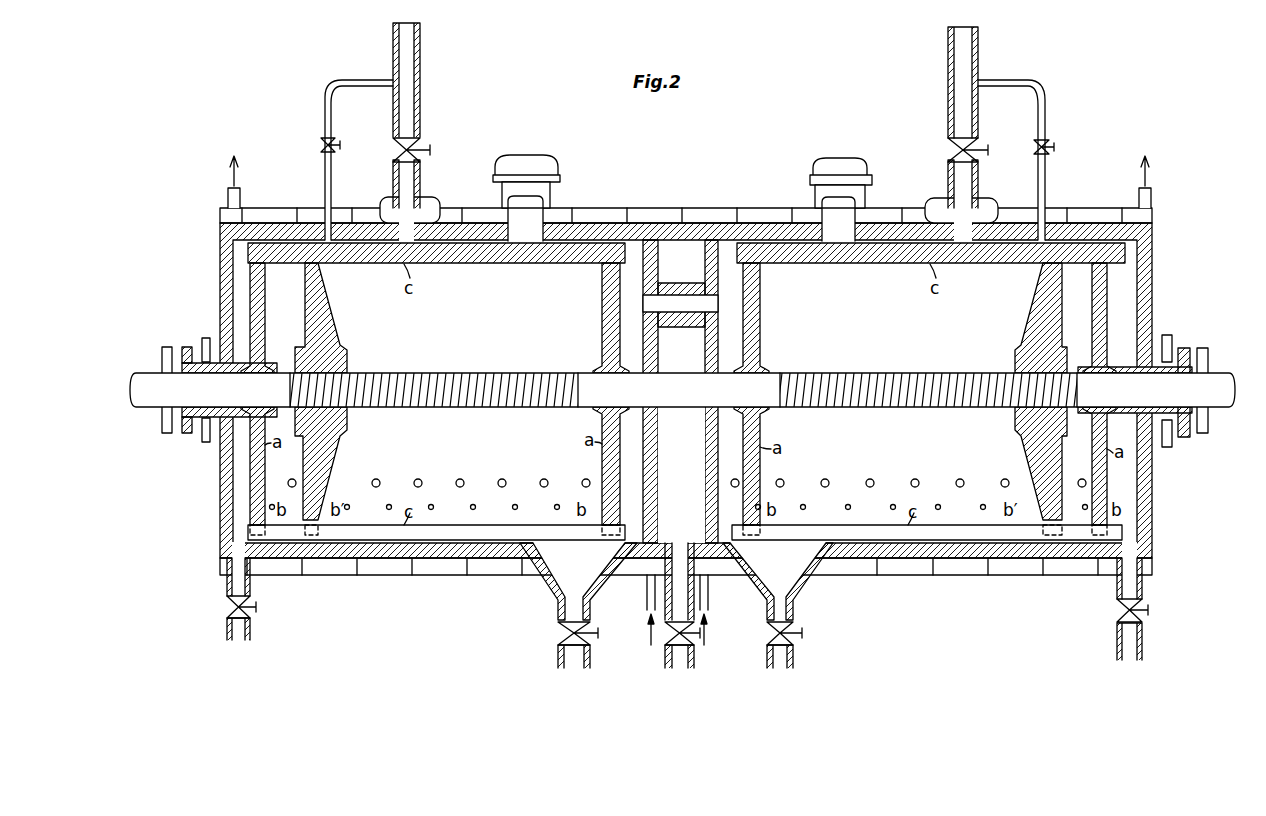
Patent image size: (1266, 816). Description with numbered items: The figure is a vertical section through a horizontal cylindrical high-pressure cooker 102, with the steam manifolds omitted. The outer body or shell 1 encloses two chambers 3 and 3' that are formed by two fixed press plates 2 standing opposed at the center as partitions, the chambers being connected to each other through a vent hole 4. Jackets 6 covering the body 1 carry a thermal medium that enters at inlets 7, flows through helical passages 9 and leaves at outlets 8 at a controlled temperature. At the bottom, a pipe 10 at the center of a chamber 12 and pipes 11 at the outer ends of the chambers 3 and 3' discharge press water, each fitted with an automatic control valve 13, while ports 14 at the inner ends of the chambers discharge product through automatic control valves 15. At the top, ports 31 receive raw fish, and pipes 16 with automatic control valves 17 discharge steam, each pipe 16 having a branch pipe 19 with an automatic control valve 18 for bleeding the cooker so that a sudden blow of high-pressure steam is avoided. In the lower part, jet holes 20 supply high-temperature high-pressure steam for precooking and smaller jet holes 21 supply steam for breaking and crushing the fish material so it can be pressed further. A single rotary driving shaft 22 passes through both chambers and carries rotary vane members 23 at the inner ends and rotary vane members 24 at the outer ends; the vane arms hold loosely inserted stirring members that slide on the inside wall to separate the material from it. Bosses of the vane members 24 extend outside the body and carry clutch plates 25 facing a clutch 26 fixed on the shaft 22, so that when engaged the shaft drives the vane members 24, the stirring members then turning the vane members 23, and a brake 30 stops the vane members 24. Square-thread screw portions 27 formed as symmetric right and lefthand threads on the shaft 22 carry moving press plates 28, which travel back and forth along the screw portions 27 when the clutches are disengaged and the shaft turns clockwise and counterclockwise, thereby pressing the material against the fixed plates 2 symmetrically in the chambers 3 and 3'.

The outer body or shell 1 is at (1153, 298).
The fixed press plate 2 is at (645, 325).
The chamber 3 is at (928, 391).
The chamber 3' is at (436, 391).
The vent hole 4 is at (718, 308).
The jacket 6 is at (437, 576).
The inlet 7 is at (645, 600).
The outlet 8 is at (228, 200).
The helical passage 9 is at (500, 576).
The press water discharge pipe 10 is at (694, 660).
The press water discharge pipe 11 is at (250, 634).
The chamber 12 is at (690, 480).
The automatic control valve 13 is at (226, 607).
The product discharge port 14 is at (544, 592).
The automatic control valve 15 is at (588, 645).
The steam discharge pipe 16 is at (420, 44).
The automatic control valve 17 is at (422, 148).
The automatic control valve 18 is at (324, 141).
The branch pipe 19 is at (325, 170).
The jet hole 20 is at (376, 479).
The smaller jet hole 21 is at (515, 503).
The rotary driving shaft 22 is at (770, 373).
The rotary vane member 23 is at (602, 325).
The rotary vane member 24 is at (265, 332).
The clutch plate 25 is at (1186, 348).
The clutch 26 is at (1210, 355).
The square-thread screw portion 27 is at (516, 373).
The moving press plate 28 is at (342, 342).
The brake 30 is at (1170, 447).
The raw fish charging port 31 is at (540, 156).
The cooker 102 is at (1178, 228).